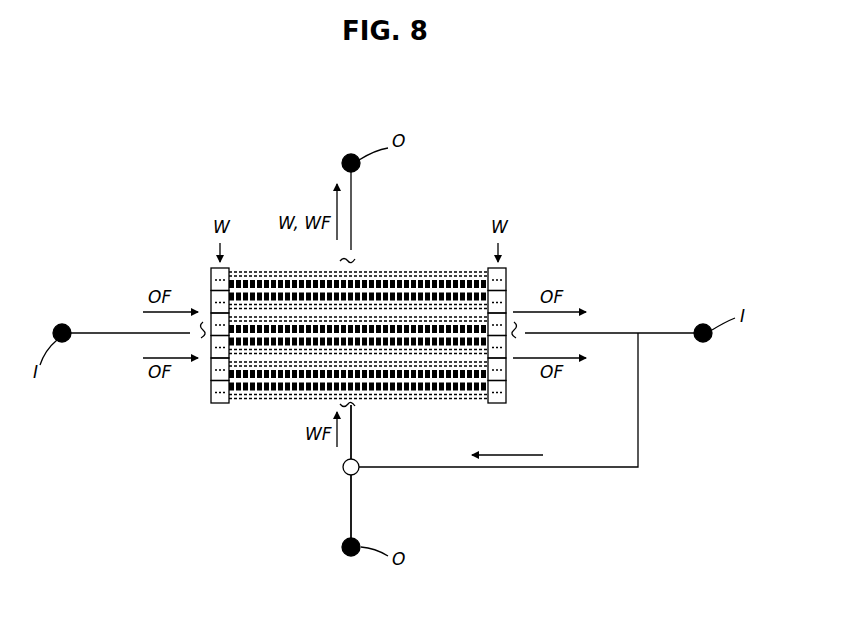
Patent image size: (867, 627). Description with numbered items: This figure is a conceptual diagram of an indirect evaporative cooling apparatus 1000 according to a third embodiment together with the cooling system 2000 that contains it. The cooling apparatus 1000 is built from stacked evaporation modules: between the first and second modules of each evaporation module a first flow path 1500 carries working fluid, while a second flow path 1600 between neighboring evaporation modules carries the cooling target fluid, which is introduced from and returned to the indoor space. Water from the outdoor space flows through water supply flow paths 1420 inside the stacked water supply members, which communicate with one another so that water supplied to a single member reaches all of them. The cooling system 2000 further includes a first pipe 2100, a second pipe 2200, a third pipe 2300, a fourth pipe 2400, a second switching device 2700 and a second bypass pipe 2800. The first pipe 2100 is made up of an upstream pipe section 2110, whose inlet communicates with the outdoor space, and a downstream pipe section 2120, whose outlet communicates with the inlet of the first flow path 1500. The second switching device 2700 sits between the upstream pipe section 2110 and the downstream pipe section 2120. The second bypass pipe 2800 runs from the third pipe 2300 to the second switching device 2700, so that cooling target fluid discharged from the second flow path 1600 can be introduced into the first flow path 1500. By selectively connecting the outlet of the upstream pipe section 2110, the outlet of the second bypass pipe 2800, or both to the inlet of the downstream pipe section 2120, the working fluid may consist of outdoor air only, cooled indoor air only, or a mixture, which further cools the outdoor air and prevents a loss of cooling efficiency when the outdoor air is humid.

The indirect evaporative cooling apparatus 1000 is at (416, 258).
The water supply flow path 1420 is at (215, 266).
The first flow path 1500 is at (348, 258).
The second flow path 1600 is at (200, 338).
The cooling system 2000 is at (183, 206).
The second pipe 2200 is at (95, 336).
The third pipe 2300 is at (680, 336).
The fourth pipe 2400 is at (352, 191).
The second switching device 2700 is at (357, 462).
The second bypass pipe 2800 is at (500, 469).
The first pipe 2100 is at (330, 562).
The 1-1-th pipe 2110 is at (350, 495).
The 1-2-th pipe 2120 is at (350, 450).